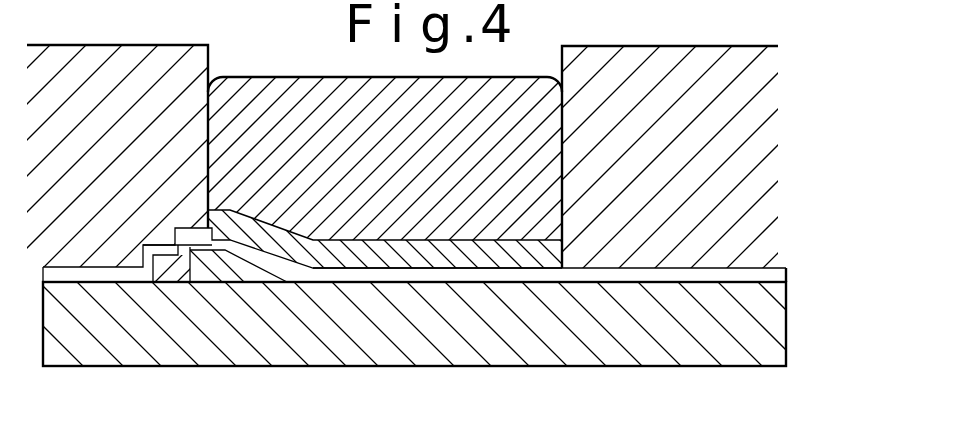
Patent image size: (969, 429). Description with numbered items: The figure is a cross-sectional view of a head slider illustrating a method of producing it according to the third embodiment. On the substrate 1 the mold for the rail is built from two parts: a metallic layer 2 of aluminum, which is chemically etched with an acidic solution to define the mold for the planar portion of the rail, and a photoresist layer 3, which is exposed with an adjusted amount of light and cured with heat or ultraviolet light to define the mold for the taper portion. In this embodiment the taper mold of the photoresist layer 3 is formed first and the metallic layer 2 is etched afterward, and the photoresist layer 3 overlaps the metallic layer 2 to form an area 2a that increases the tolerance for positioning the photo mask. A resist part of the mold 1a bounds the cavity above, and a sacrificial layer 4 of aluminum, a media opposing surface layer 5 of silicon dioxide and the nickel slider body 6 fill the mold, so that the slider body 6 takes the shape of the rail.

The substrate 1 is at (780, 323).
The part of mold consisting of a resist 1a is at (210, 82).
The metallic layer 2 is at (167, 261).
The area 2a is at (203, 257).
The photoresist layer 3 is at (202, 258).
The sacrificial layer 4 is at (755, 268).
The media opposing surface layer 5 is at (563, 258).
The slider body 6 is at (556, 145).